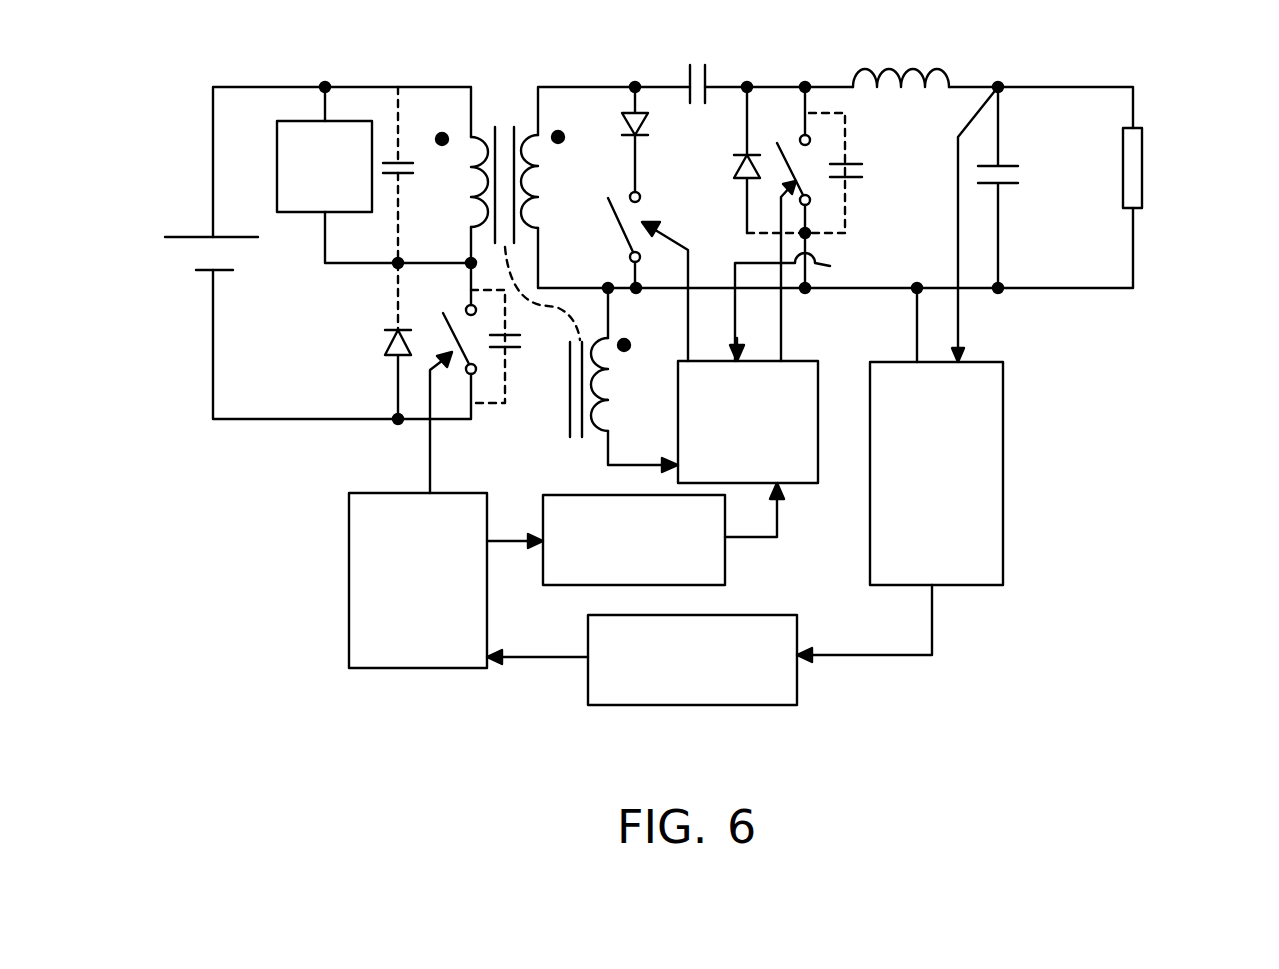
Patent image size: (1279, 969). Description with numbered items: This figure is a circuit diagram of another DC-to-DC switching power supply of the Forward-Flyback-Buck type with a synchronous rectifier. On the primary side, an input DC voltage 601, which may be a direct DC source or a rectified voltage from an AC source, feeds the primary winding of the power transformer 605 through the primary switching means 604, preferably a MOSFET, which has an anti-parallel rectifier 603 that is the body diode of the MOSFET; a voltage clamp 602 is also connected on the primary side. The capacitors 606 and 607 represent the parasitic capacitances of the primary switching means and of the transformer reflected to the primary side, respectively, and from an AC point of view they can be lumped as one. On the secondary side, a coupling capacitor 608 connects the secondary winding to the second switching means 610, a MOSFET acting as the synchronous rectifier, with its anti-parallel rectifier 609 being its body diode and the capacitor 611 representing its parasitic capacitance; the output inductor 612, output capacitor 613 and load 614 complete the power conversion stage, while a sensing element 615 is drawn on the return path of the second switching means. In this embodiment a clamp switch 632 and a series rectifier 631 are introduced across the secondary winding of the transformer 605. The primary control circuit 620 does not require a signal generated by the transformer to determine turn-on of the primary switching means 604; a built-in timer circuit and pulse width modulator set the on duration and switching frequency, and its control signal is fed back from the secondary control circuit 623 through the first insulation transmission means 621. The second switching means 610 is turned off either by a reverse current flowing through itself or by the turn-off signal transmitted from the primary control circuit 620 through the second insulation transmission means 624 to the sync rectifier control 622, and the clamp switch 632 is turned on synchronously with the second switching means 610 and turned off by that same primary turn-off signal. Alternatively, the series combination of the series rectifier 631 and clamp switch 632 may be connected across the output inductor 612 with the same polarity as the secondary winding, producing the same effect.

The input DC voltage 601 is at (207, 236).
The voltage clamp 602 is at (352, 121).
The anti-parallel rectifier 603 is at (388, 344).
The primary switching means 604 is at (474, 375).
The power transformer 605 is at (518, 118).
The capacitor 606 is at (392, 178).
The capacitor 607 is at (516, 348).
The coupling capacitor 608 is at (716, 72).
The anti-parallel rectifier 609 is at (741, 171).
The second switching means 610 is at (808, 168).
The capacitor 611 is at (856, 178).
The output inductor 612 is at (942, 70).
The output capacitor 613 is at (1002, 183).
The load 614 is at (1140, 206).
The current sensor 615 is at (830, 266).
The primary control circuit 620 is at (433, 670).
The first insulation transmission means 621 is at (680, 707).
The sync rectifier control 622 is at (818, 462).
The secondary control circuit 623 is at (975, 590).
The second insulation transmission means 624 is at (727, 563).
The series rectifier 631 is at (646, 118).
The clamp switch 632 is at (622, 218).